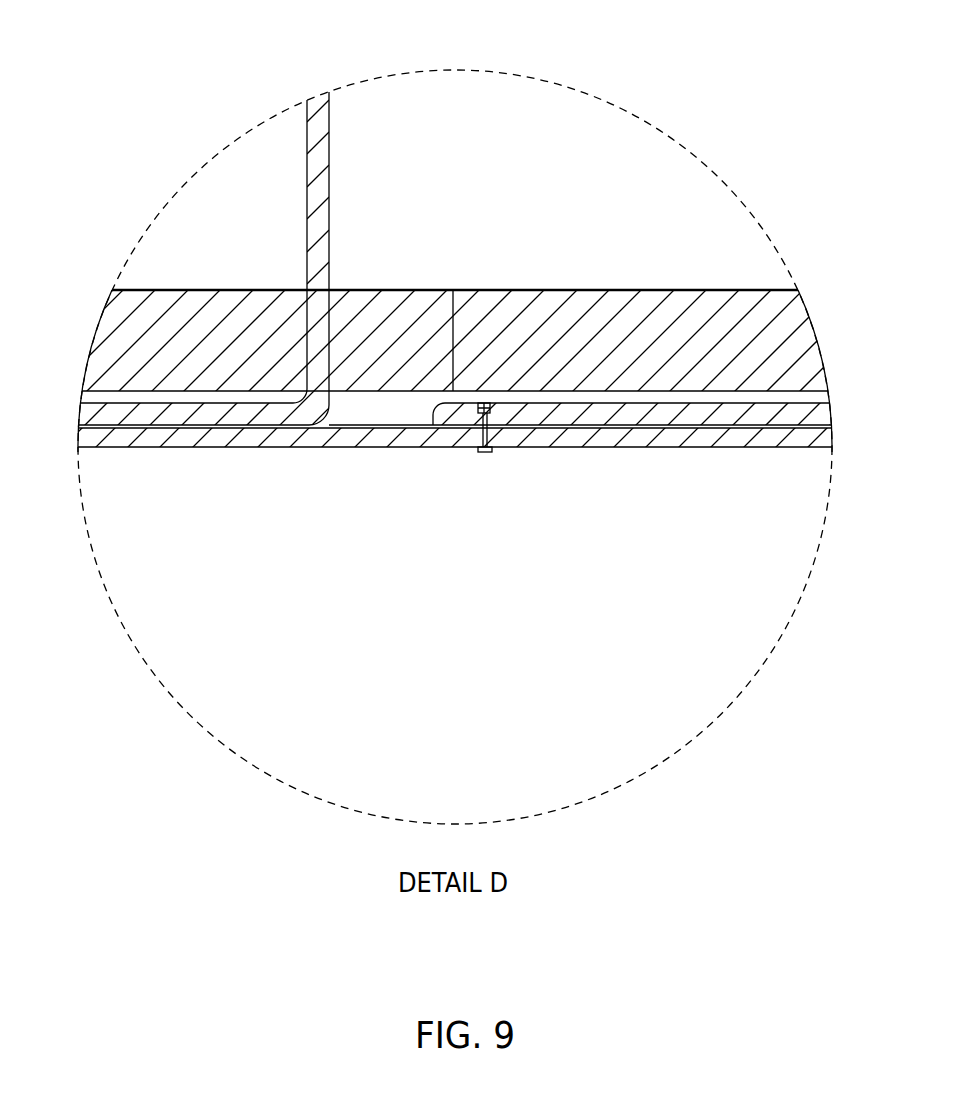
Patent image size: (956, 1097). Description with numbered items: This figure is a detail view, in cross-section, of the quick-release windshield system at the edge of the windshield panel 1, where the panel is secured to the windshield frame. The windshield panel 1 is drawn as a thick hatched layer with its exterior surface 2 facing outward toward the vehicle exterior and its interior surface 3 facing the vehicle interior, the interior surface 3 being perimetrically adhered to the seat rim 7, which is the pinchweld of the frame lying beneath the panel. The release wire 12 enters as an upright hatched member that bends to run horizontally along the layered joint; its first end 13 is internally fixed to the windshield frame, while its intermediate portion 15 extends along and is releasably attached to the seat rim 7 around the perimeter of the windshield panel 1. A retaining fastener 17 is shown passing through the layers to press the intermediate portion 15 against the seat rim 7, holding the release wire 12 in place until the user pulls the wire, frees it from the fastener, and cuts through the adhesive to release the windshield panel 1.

The windshield panel 1 is at (393, 287).
The exterior surface 2 is at (528, 289).
The interior surface 3 is at (826, 379).
The seat rim 7 is at (347, 439).
The release wire 12 is at (300, 255).
The first end 13 is at (432, 417).
The intermediate portion 15 is at (663, 412).
The retaining fasteners 17 is at (492, 454).